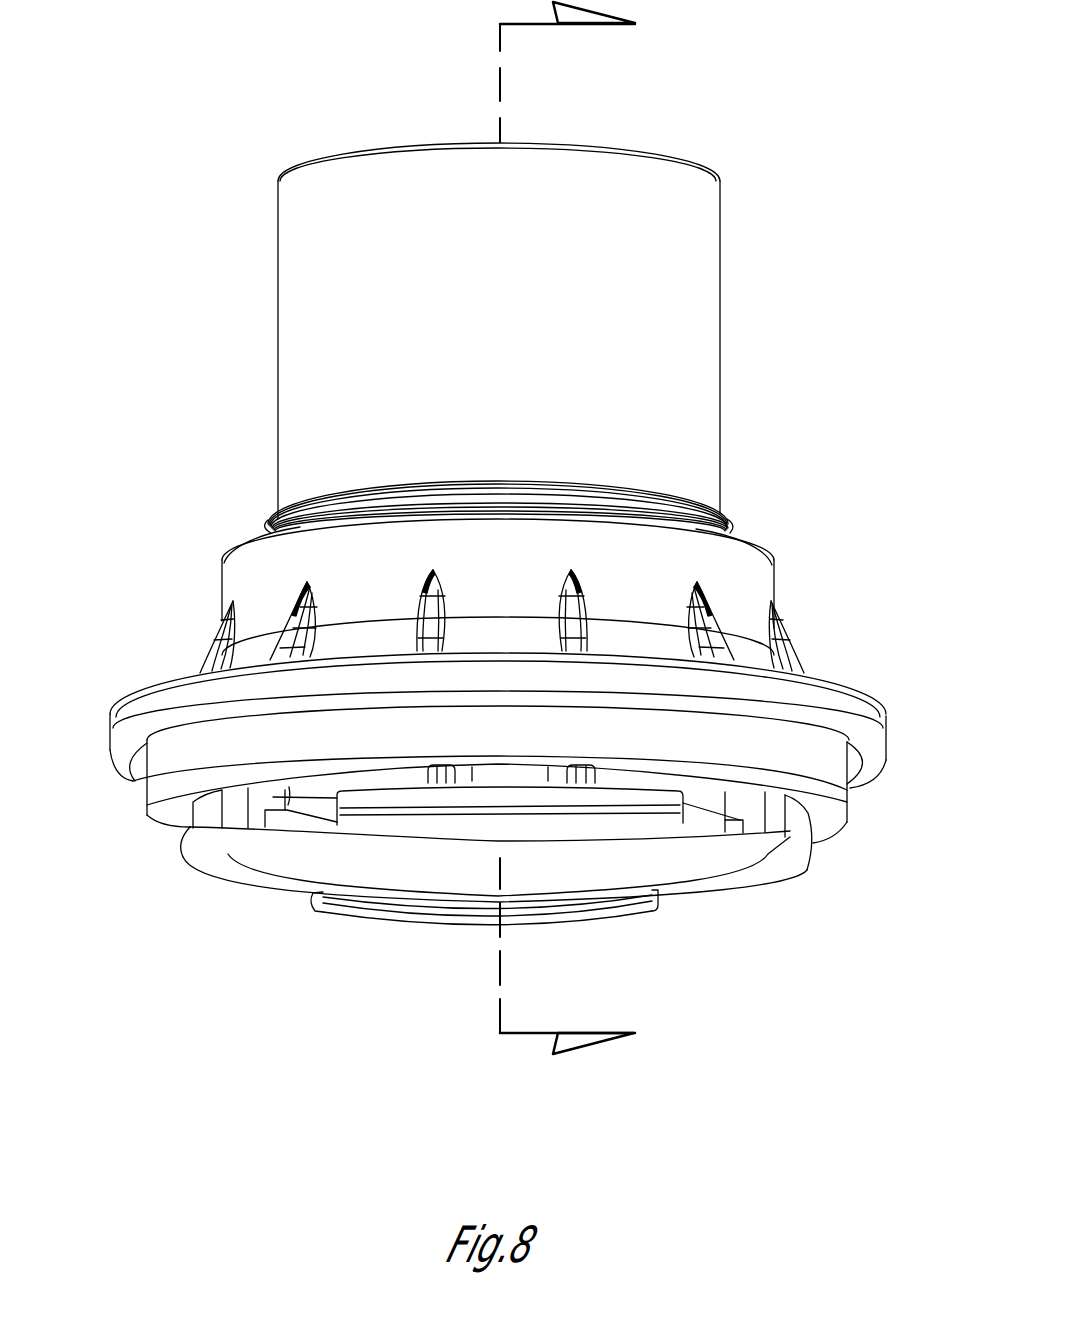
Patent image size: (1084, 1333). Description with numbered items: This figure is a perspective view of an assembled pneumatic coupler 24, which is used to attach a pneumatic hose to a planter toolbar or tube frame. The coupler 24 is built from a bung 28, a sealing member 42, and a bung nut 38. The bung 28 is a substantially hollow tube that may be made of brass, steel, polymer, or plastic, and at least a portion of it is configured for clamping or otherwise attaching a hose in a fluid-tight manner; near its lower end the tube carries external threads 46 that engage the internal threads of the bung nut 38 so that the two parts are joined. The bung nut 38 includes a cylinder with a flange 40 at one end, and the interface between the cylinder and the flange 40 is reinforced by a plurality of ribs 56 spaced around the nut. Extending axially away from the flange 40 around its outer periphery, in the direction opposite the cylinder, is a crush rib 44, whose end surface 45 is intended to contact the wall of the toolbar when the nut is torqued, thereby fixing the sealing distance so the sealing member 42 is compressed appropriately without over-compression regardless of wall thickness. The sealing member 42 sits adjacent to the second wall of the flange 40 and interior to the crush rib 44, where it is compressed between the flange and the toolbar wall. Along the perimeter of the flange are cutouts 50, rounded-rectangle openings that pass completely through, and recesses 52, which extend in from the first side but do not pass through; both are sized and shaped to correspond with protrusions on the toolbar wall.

The pneumatic coupler 24 is at (263, 79).
The bung 28 is at (688, 290).
The external threads 46 is at (727, 516).
The bung nut 38 is at (813, 582).
The ribs 56 is at (785, 652).
The flange 40 is at (490, 728).
The crush rib 44 is at (120, 724).
The surface 45 is at (873, 757).
The sealing member 42 is at (150, 792).
The recesses 52 is at (187, 822).
The cutouts 50 is at (297, 817).